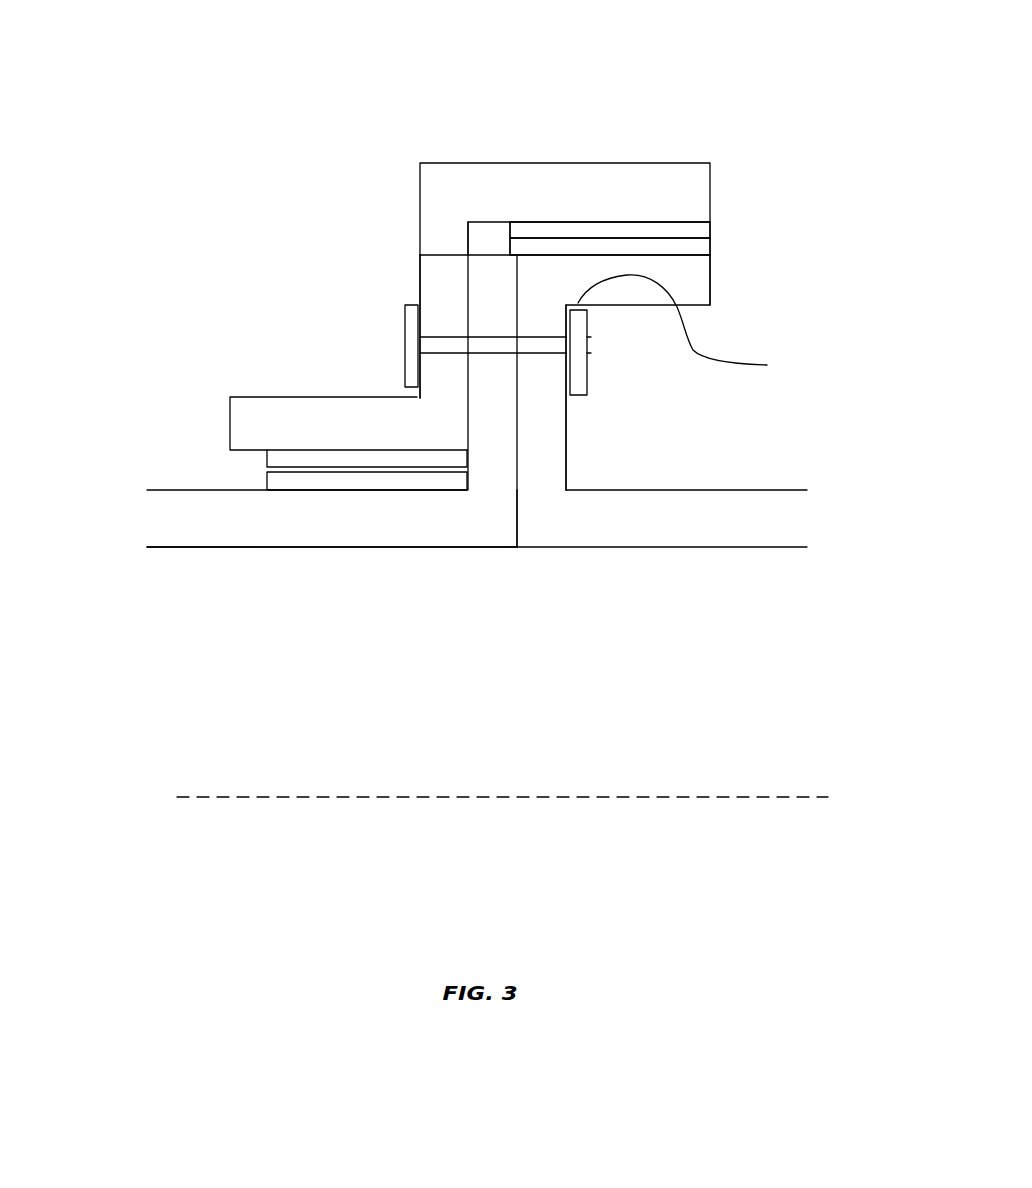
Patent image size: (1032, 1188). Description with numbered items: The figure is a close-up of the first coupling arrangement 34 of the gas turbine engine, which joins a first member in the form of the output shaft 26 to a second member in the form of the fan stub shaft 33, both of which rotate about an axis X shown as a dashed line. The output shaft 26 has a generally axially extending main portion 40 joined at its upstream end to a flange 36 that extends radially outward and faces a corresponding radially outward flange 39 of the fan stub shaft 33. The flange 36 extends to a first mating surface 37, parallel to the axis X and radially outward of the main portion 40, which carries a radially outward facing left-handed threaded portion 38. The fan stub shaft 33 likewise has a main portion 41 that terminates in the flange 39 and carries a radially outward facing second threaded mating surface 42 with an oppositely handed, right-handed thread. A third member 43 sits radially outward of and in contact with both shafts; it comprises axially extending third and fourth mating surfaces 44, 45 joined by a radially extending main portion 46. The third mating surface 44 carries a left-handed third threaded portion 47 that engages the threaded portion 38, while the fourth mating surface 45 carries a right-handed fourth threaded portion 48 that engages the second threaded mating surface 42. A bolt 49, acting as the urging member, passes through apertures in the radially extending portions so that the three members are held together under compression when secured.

The output shaft 26 is at (672, 580).
The fan stub shaft 33 is at (296, 557).
The coupling arrangement 34 is at (535, 628).
The flange 36 is at (650, 397).
The first mating surface 37 is at (693, 372).
The threaded portion 38 is at (691, 277).
The flange 39 is at (535, 334).
The main portion 40 is at (686, 587).
The main portion 41 is at (332, 568).
The second threaded mating surface 42 is at (367, 557).
The third member 43 is at (316, 275).
The third mating surface 44 is at (565, 218).
The fourth mating surface 45 is at (323, 341).
The main portion 46 is at (383, 177).
The third threaded portion 47 is at (680, 188).
The fourth threaded portion 48 is at (291, 374).
The bolt 49 is at (601, 366).
The axis X is at (502, 750).